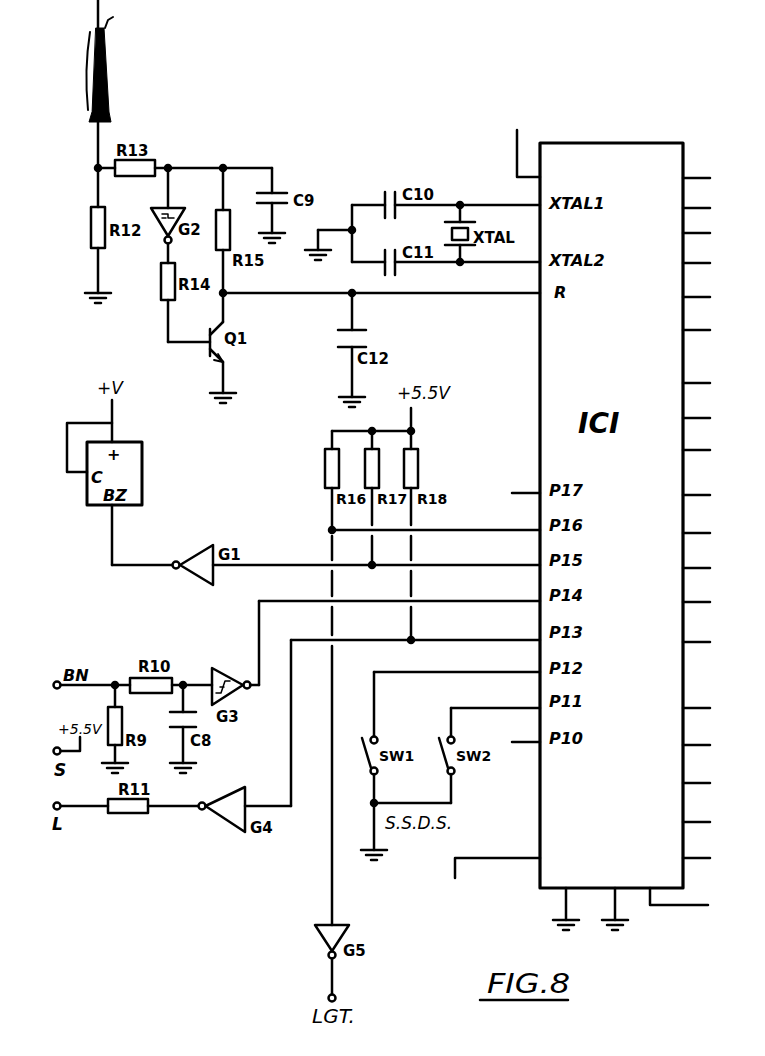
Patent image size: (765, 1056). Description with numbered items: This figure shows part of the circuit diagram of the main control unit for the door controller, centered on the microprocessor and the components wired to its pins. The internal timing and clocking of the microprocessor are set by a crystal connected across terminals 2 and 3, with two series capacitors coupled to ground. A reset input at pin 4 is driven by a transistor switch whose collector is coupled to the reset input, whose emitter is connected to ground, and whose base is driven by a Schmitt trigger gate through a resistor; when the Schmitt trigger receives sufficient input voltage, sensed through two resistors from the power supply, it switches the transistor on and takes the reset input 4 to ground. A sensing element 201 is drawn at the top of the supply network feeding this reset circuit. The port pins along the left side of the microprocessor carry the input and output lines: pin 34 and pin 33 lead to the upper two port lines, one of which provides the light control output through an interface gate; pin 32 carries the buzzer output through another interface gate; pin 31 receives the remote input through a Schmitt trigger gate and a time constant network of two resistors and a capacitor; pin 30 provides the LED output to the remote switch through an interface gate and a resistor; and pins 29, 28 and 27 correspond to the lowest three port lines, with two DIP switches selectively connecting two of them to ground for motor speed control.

The electrode probe 201 is at (120, 84).
The microprocessor terminal 2 is at (446, 195).
The microprocessor terminal 3 is at (446, 252).
The reset input 4 is at (381, 284).
The port pin P10 27 is at (523, 732).
The port pin P11 28 is at (495, 698).
The port pin P12 29 is at (457, 662).
The port pin P13 30 is at (415, 629).
The port pin P14 31 is at (399, 590).
The port pin P15 32 is at (376, 555).
The port pin P16 33 is at (436, 520).
The port pin P17 34 is at (523, 483).